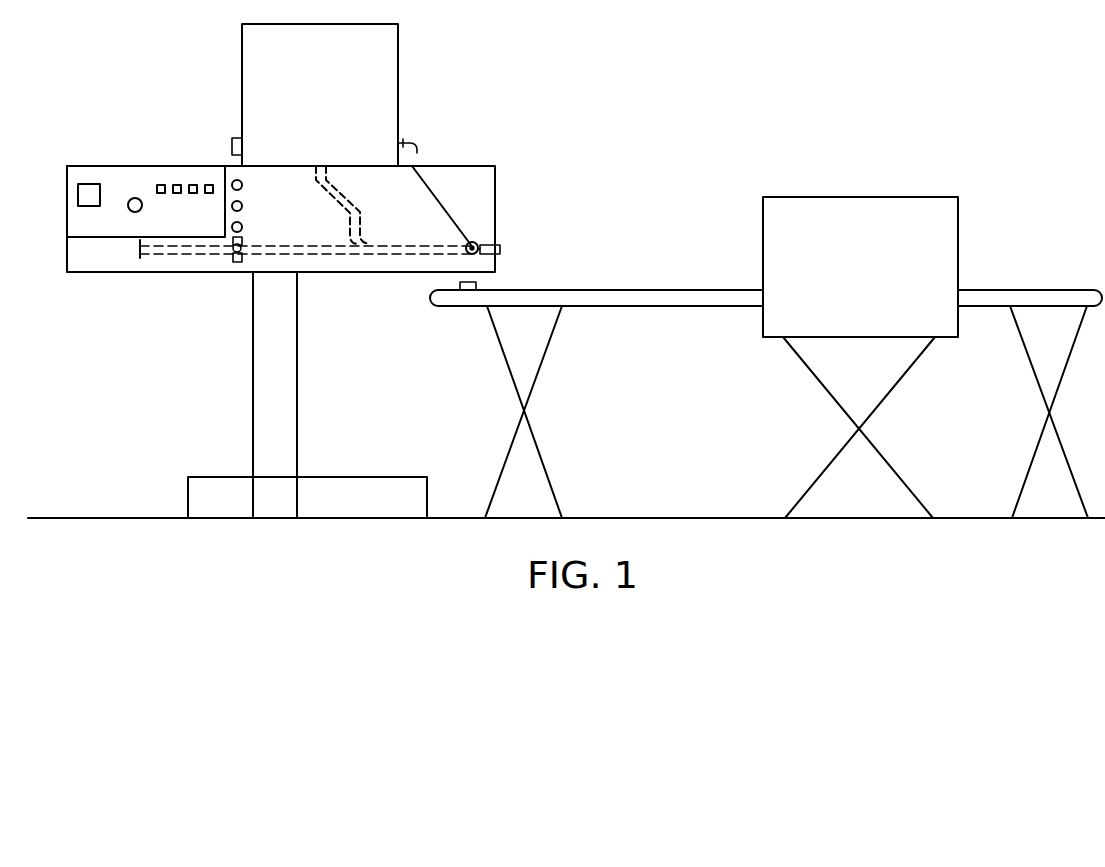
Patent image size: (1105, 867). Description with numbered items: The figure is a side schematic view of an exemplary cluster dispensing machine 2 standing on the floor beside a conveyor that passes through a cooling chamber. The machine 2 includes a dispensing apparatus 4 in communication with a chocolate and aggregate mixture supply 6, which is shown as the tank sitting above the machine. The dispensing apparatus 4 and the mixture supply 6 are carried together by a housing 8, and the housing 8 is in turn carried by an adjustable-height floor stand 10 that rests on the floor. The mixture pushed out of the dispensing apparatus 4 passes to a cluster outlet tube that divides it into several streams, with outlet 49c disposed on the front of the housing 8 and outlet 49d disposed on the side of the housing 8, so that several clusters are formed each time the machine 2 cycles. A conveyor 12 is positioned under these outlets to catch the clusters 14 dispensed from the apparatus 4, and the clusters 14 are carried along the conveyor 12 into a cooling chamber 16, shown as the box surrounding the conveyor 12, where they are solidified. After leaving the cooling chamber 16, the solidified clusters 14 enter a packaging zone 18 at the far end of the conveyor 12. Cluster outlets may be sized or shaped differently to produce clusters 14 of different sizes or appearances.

The cluster dispensing machine 2 is at (486, 61).
The dispensing apparatus 4 is at (353, 192).
The chocolate and aggregate mixture supply 6 is at (262, 76).
The housing 8 is at (349, 270).
The adjustable-height floor stand 10 is at (262, 387).
The conveyor 12 is at (658, 287).
The clusters 14 is at (478, 287).
The cooling chamber 16 is at (854, 204).
The packaging zone 18 is at (1040, 288).
The outlet 49c is at (500, 246).
The outlet 49d is at (475, 245).